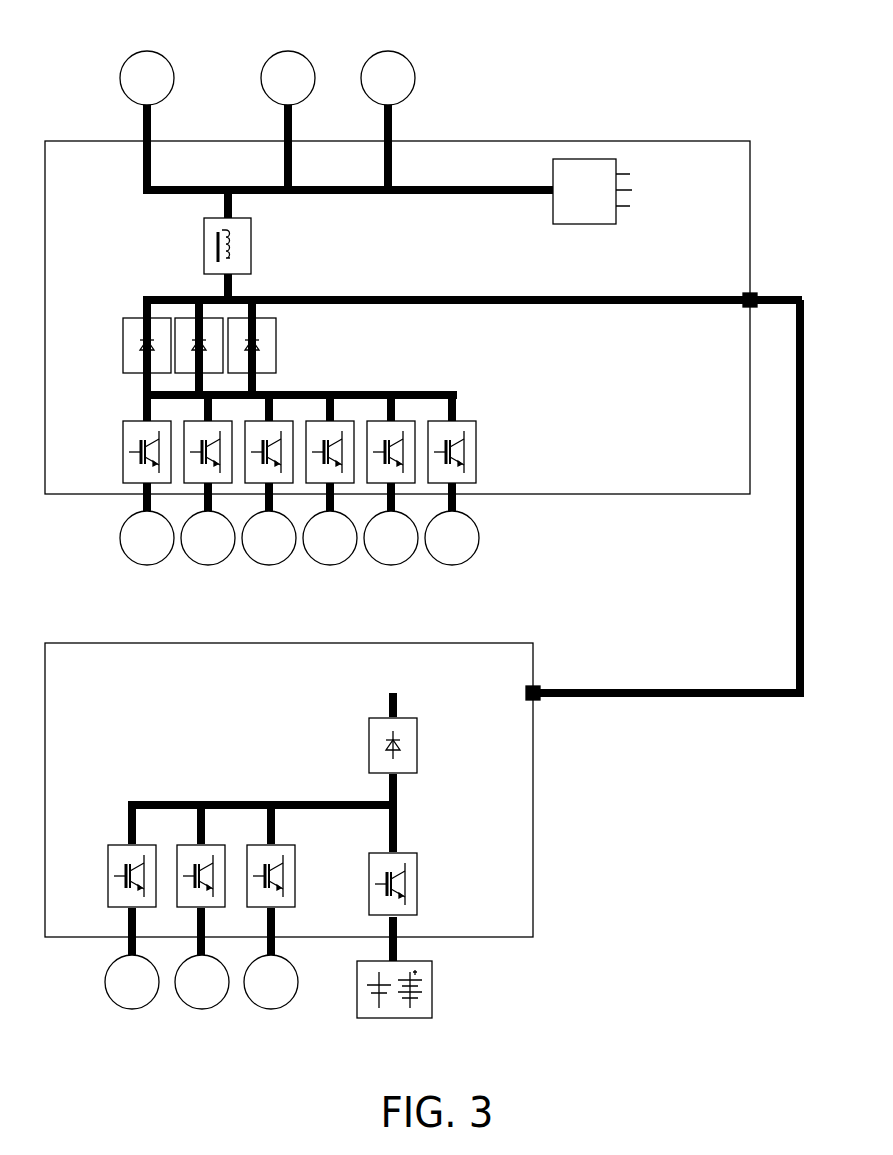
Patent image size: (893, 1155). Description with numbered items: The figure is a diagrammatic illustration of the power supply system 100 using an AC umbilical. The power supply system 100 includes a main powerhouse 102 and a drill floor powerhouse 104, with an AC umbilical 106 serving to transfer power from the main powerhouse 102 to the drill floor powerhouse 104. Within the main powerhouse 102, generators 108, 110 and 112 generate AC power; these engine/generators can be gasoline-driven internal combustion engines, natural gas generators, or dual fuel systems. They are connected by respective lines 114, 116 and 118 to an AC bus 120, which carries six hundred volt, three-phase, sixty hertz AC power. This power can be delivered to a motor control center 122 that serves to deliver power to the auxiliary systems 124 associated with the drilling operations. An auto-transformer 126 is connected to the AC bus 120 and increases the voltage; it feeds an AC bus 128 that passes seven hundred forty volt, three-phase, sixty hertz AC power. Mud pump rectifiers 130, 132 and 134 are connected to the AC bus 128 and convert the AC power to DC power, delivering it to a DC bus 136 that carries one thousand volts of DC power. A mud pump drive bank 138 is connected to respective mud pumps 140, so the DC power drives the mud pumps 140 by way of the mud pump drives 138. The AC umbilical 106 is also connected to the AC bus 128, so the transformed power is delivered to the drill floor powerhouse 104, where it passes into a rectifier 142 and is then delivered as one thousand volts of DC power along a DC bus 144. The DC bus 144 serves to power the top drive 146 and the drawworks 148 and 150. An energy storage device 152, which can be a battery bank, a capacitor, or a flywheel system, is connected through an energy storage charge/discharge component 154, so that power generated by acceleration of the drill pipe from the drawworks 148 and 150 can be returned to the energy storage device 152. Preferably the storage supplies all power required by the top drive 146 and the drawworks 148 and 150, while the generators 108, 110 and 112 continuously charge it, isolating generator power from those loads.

The power supply system 100 is at (651, 68).
The main powerhouse 102 is at (680, 142).
The drill floor powerhouse 104 is at (505, 643).
The AC umbilical 106 is at (796, 528).
The generator 108 is at (148, 51).
The generator 110 is at (289, 51).
The generator 112 is at (388, 51).
The line 114 is at (151, 115).
The line 116 is at (292, 115).
The line 118 is at (392, 118).
The AC bus 120 is at (446, 195).
The motor control center 122 is at (585, 159).
The auxiliary systems 124 is at (684, 229).
The auto-transformer 126 is at (251, 243).
The AC bus 128 is at (540, 299).
The mud pump rectifier 130 is at (123, 345).
The mud pump rectifier 132 is at (210, 377).
The mud pump rectifier 134 is at (277, 335).
The DC bus 136 is at (357, 395).
The mud pump drive bank 138 is at (114, 460).
The mud pumps 140 is at (112, 546).
The rectifier 142 is at (417, 748).
The DC bus 144 is at (232, 805).
The top drive 146 is at (132, 1009).
The drawworks 148 is at (202, 1009).
The drawworks 150 is at (271, 1009).
The energy storage device 152 is at (432, 981).
The energy storage charge/discharge component 154 is at (417, 878).